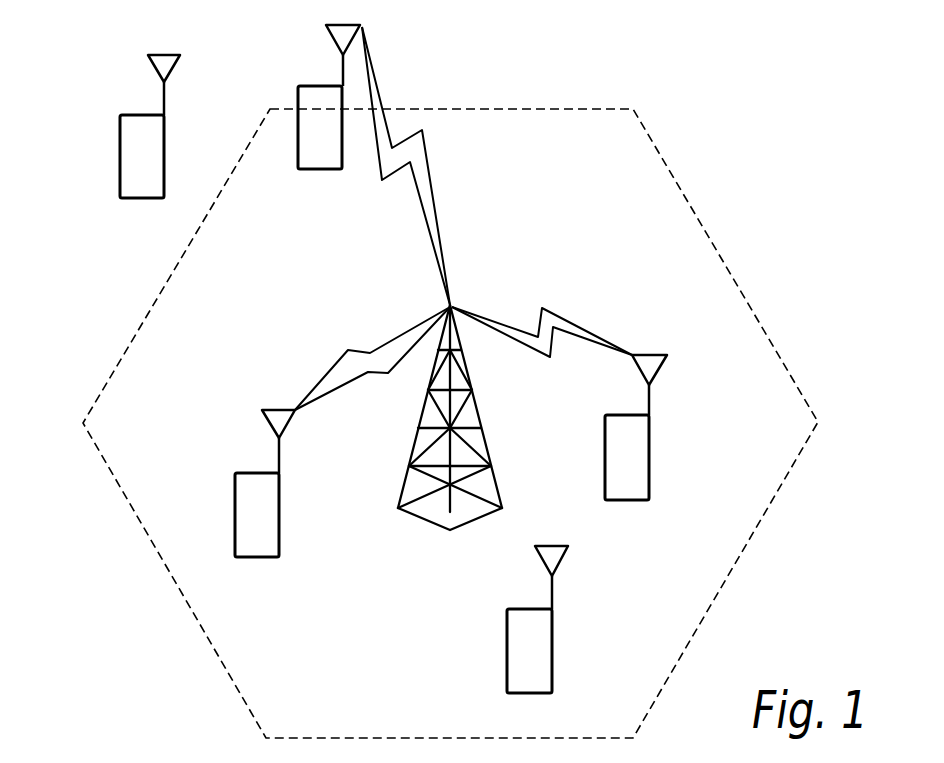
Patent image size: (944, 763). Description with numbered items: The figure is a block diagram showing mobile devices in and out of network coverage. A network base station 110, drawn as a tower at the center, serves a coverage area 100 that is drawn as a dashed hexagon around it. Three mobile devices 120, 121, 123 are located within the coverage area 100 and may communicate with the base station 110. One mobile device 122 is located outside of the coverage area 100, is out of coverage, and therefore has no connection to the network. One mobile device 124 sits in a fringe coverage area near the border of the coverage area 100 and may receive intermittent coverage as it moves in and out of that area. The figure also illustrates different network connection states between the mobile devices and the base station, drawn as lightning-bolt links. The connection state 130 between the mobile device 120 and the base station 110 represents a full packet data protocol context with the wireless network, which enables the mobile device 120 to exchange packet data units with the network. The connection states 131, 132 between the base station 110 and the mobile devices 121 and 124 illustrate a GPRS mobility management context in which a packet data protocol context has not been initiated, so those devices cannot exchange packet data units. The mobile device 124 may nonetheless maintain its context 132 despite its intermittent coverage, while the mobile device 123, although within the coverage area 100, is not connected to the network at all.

The coverage area 100 is at (730, 270).
The network base station 110 is at (488, 448).
The mobile device 120 is at (630, 502).
The mobile device 121 is at (280, 510).
The mobile device 122 is at (118, 157).
The mobile device 123 is at (505, 655).
The mobile device 124 is at (310, 86).
The connection state 130 is at (567, 320).
The connection state 131 is at (374, 333).
The connection state 132 is at (428, 152).